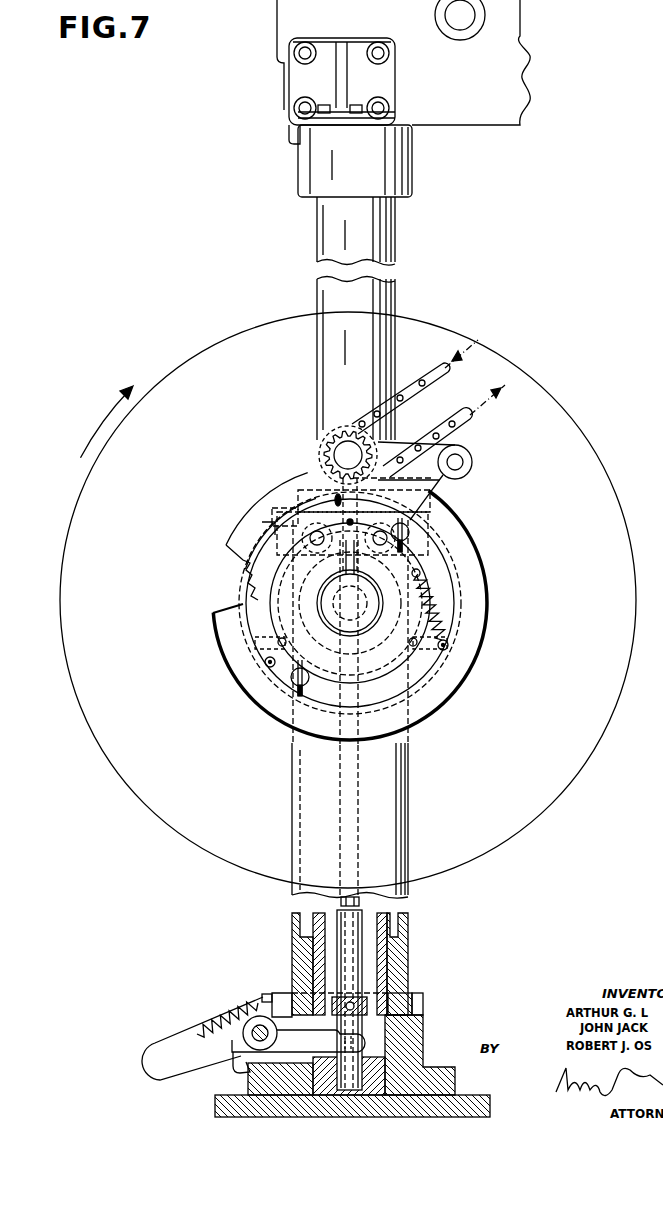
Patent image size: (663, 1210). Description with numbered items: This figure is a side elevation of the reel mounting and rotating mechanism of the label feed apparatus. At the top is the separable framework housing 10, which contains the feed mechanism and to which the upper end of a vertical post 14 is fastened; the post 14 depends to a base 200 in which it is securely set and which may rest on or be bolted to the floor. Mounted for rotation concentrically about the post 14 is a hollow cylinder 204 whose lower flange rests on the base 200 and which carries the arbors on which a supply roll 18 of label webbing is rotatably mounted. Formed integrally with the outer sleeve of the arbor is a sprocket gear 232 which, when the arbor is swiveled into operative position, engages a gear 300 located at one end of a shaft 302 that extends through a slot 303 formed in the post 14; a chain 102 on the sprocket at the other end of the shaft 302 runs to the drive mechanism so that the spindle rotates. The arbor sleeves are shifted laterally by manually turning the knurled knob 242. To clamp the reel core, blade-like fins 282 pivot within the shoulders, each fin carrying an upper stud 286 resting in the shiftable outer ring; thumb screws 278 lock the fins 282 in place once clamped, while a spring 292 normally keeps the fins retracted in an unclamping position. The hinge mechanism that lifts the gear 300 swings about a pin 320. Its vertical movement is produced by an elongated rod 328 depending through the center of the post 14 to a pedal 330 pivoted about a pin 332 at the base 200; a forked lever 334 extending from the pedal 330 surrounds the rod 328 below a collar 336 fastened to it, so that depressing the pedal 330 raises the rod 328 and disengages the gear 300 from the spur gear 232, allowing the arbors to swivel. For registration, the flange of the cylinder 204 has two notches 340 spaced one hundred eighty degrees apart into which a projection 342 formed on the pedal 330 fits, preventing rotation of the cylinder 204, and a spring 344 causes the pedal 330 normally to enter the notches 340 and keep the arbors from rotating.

The framework housing 10 is at (480, 113).
The post 14 is at (395, 296).
The supply roll 18 is at (583, 433).
The chain 102 is at (428, 422).
The base 200 is at (451, 1078).
The hollow cylinder 204 is at (405, 884).
The sprocket gear 232 is at (240, 583).
The knurled knob 242 is at (366, 636).
The thumb screws 278 is at (403, 547).
The fin 282 is at (262, 660).
The upper stud 286 is at (268, 666).
The spring 292 is at (437, 595).
The gear 300 is at (387, 450).
The shaft 302 is at (328, 440).
The slot 303 is at (335, 427).
The pin 320 is at (467, 463).
The elongated rod 328 is at (362, 903).
The pedal 330 is at (160, 1063).
The pin 332 is at (243, 1056).
The forked lever 334 is at (258, 998).
The collar 336 is at (370, 1002).
The notches 340 is at (288, 992).
The projection 342 is at (272, 994).
The spring 344 is at (243, 1004).